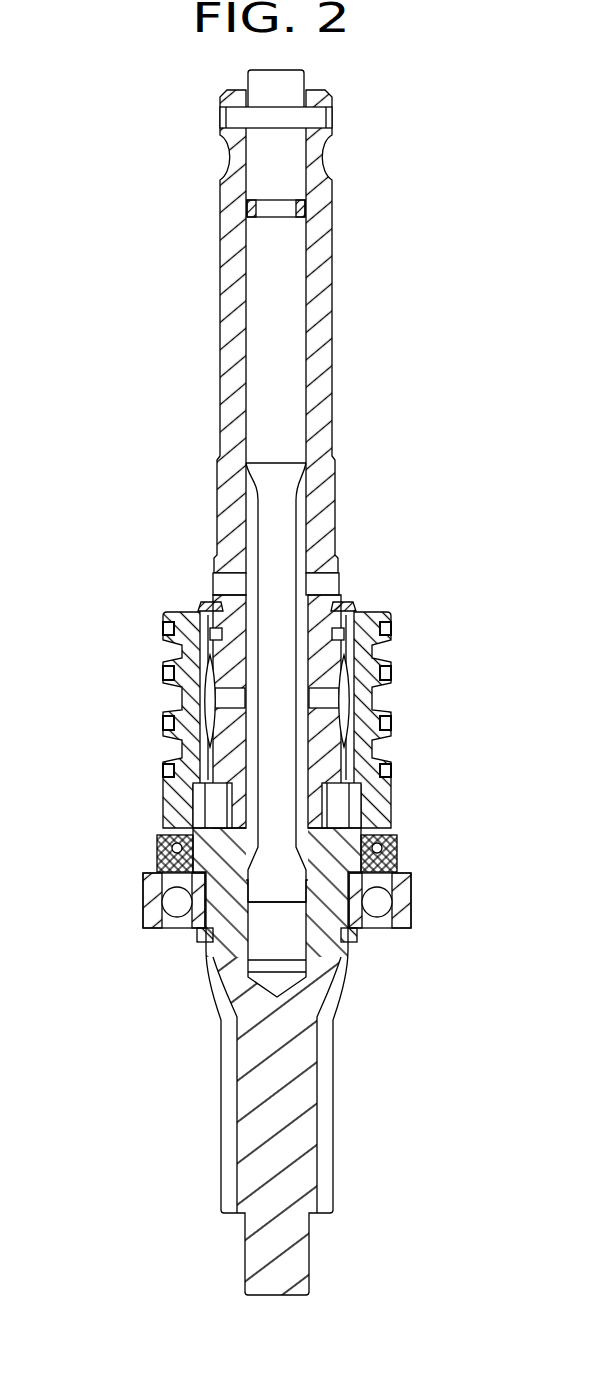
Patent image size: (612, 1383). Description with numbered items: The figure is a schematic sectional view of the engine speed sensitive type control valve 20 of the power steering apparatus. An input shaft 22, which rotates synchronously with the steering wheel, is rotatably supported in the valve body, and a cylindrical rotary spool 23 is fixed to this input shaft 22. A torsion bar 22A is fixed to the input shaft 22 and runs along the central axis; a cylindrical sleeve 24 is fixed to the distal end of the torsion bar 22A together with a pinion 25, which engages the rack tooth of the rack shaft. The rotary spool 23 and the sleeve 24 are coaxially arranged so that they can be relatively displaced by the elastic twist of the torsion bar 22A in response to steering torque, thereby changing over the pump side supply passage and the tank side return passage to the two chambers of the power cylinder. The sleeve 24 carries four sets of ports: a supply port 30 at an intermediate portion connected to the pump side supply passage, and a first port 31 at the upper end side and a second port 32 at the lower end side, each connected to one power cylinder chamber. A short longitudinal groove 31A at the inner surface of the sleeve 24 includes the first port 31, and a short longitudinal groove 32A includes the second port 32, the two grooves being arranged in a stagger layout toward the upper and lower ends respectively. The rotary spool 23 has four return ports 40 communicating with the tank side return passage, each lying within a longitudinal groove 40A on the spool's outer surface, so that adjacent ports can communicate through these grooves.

The engine speed sensitive type control valve 20 is at (127, 497).
The input shaft 22 is at (227, 193).
The torsion bar 22A is at (286, 506).
The cylindrical rotary spool 23 is at (230, 608).
The cylindrical sleeve 24 is at (177, 803).
The pinion 25 is at (220, 1137).
The supply port 30 is at (363, 700).
The first port 31 is at (367, 655).
The longitudinal groove 31A is at (374, 672).
The second port 32 is at (363, 745).
The longitudinal groove 32A is at (173, 742).
The return port 40 is at (227, 698).
The longitudinal groove 40A is at (165, 672).